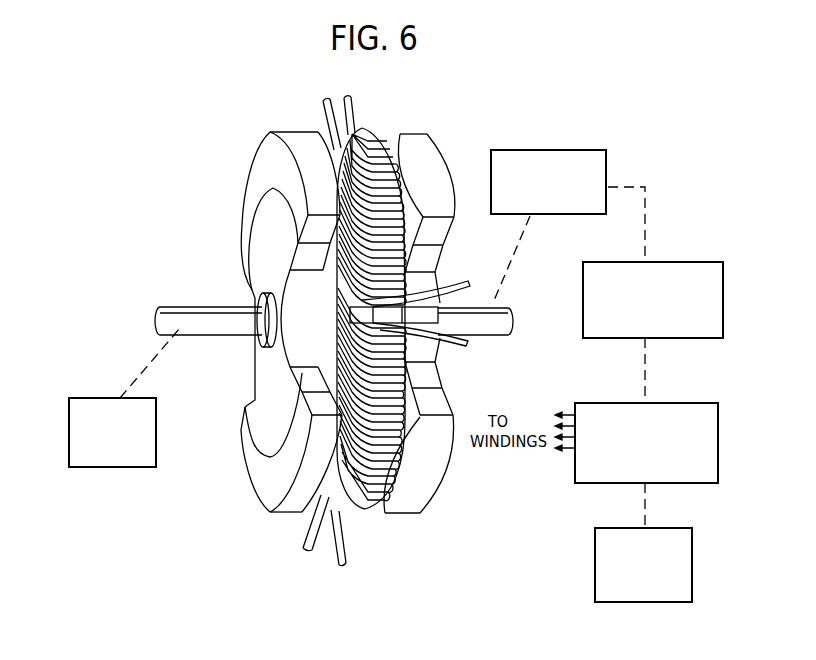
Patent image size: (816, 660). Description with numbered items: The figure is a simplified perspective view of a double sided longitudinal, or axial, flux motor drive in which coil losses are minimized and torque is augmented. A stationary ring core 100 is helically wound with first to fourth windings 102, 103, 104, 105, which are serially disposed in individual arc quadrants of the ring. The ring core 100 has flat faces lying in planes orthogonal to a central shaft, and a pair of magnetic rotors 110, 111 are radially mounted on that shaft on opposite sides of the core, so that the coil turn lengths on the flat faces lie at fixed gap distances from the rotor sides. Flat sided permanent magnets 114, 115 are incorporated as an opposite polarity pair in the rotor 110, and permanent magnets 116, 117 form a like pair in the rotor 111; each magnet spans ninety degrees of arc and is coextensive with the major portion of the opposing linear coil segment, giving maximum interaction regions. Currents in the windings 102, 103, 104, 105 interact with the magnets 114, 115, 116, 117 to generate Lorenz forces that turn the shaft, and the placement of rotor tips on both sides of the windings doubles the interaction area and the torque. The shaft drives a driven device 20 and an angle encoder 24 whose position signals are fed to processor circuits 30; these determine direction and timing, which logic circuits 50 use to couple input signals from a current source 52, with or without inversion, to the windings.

The driven device 20 is at (80, 398).
The angle encoder 24 is at (560, 150).
The processor circuits 30 is at (703, 262).
The logic circuits 50 is at (716, 403).
The current source 52 is at (692, 545).
The ring core 100 is at (383, 315).
The first winding 102 is at (377, 148).
The second winding 103 is at (367, 515).
The third winding 104 is at (320, 490).
The fourth winding 105 is at (368, 197).
The magnetic rotor 110 is at (258, 362).
The magnetic rotor 111 is at (440, 280).
The permanent magnet 114 is at (257, 173).
The permanent magnet 115 is at (258, 490).
The permanent magnet 116 is at (440, 194).
The permanent magnet 117 is at (433, 470).